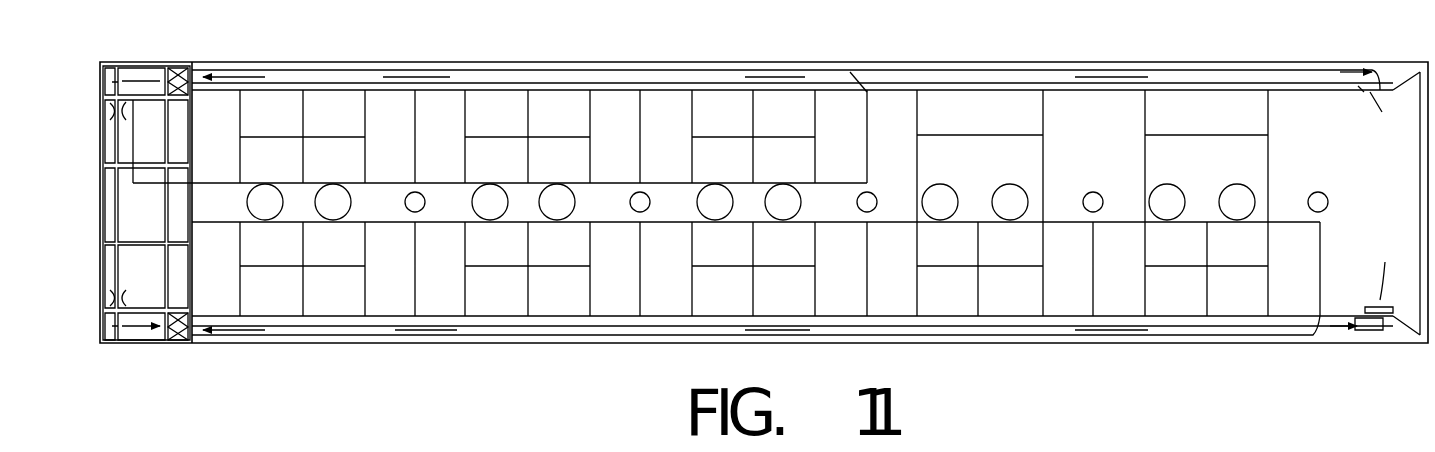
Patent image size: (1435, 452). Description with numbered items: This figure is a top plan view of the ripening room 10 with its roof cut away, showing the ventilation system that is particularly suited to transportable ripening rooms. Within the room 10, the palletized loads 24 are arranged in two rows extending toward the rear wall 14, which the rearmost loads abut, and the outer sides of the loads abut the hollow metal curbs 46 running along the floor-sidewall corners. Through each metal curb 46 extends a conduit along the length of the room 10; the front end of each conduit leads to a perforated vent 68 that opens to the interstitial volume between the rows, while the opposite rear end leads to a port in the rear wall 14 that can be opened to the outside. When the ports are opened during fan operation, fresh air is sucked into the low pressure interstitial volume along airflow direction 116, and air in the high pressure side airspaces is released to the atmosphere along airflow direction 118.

The ripening room 10 is at (1005, 50).
The rear wall 14 is at (185, 145).
The palletized load 24 is at (1305, 258).
The metal curb 46 is at (505, 332).
The perforated vent 68 is at (1360, 90).
The airflow direction 116 is at (112, 82).
The airflow direction 118 is at (217, 75).